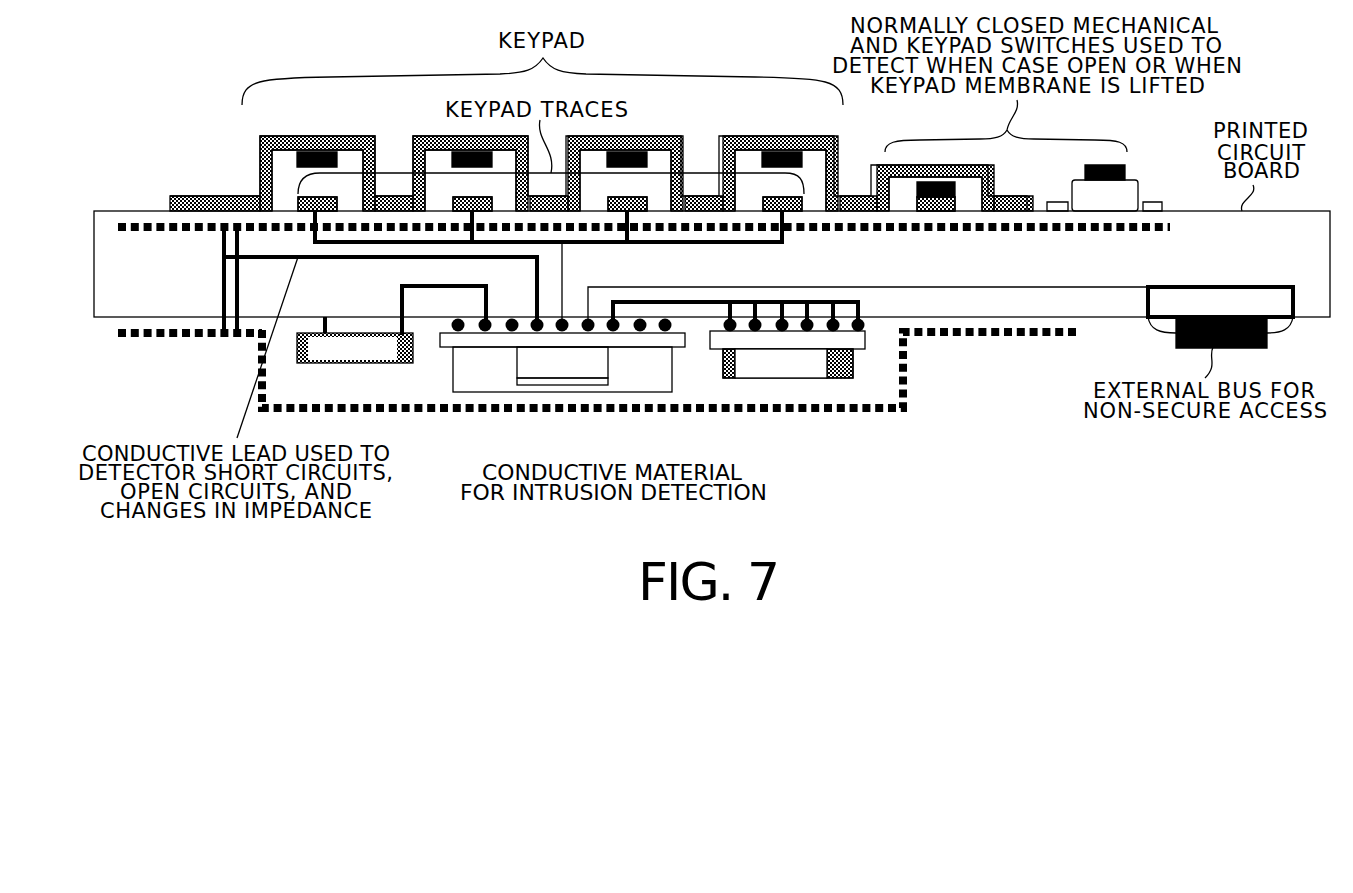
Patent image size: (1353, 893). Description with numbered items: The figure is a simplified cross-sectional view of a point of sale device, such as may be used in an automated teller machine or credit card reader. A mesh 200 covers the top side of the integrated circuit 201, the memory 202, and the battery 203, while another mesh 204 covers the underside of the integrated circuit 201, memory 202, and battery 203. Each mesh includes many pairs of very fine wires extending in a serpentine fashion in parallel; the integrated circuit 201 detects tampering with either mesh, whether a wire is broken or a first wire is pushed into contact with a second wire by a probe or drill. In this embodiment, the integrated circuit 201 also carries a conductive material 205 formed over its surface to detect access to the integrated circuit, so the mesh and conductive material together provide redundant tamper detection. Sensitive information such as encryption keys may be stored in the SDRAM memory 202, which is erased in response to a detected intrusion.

The mesh 200 is at (817, 408).
The integrated circuit 201 is at (562, 356).
The memory 202 is at (853, 362).
The battery 203 is at (373, 363).
The mesh 204 is at (148, 224).
The conductive material 205 is at (587, 385).